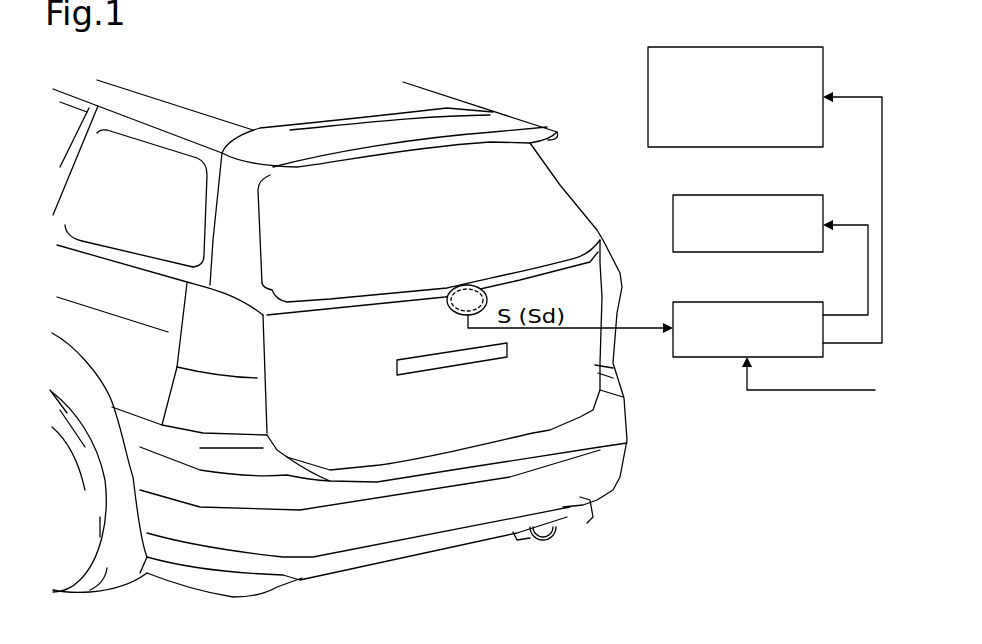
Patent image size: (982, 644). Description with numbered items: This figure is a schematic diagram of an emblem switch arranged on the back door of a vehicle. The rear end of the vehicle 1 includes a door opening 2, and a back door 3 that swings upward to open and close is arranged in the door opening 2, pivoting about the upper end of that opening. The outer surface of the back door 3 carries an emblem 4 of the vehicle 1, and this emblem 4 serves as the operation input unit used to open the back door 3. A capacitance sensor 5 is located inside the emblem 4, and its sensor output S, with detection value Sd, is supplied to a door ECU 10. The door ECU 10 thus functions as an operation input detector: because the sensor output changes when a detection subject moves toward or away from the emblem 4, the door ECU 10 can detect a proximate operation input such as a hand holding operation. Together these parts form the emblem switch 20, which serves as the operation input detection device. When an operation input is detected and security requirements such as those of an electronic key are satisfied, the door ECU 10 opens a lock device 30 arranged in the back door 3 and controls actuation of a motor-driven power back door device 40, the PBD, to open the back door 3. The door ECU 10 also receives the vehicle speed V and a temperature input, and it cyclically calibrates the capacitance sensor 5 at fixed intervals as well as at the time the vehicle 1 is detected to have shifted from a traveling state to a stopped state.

The vehicle 1 is at (519, 77).
The door opening 2 is at (268, 352).
The back door 3 is at (543, 402).
The emblem 4 is at (447, 308).
The capacitance sensor 5 is at (468, 285).
The door ECU 10 is at (782, 302).
The emblem switch 20 is at (757, 424).
The lock device 30 is at (782, 196).
The power back door device 40 is at (782, 47).